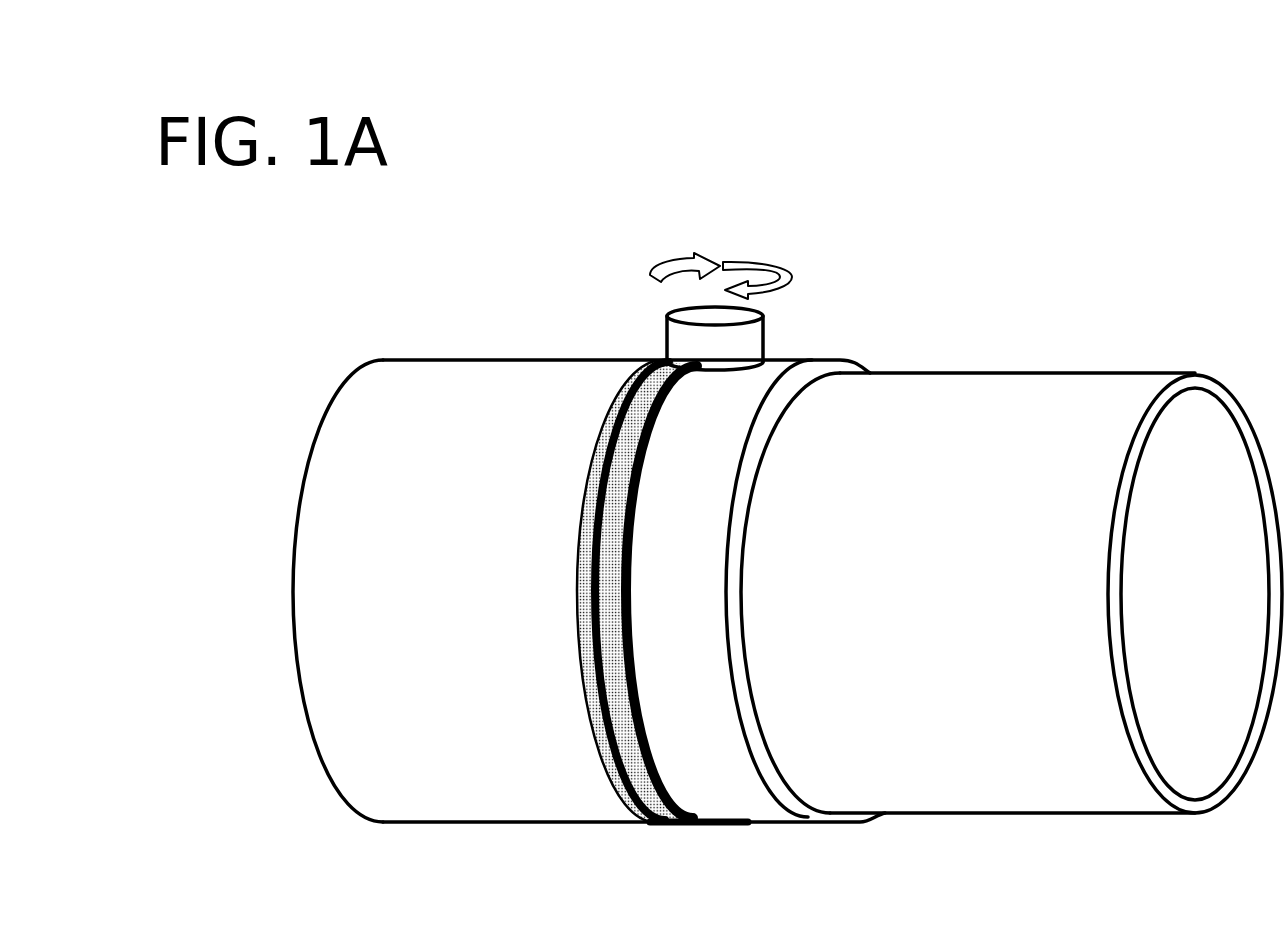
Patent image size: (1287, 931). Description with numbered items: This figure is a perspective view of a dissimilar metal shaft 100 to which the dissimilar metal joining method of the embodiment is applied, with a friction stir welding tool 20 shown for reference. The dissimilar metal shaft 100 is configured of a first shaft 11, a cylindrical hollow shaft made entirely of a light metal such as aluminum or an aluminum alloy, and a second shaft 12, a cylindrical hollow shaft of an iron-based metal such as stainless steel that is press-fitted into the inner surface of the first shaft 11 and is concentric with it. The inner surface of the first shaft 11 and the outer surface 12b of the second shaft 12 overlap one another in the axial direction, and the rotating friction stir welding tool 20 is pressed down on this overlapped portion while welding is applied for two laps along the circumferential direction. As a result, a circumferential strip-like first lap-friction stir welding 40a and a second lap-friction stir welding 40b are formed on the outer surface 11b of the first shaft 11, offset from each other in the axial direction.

The dissimilar metal shaft 100 is at (752, 212).
The first shaft 11 is at (545, 347).
The outer surface of the first shaft 11b is at (410, 420).
The second shaft 12 is at (1093, 362).
The outer surface of the second shaft 12b is at (960, 420).
The friction stir welding tool 20 is at (777, 325).
The first lap-friction stir welding 40a is at (583, 617).
The second lap-friction stir welding 40b is at (622, 680).